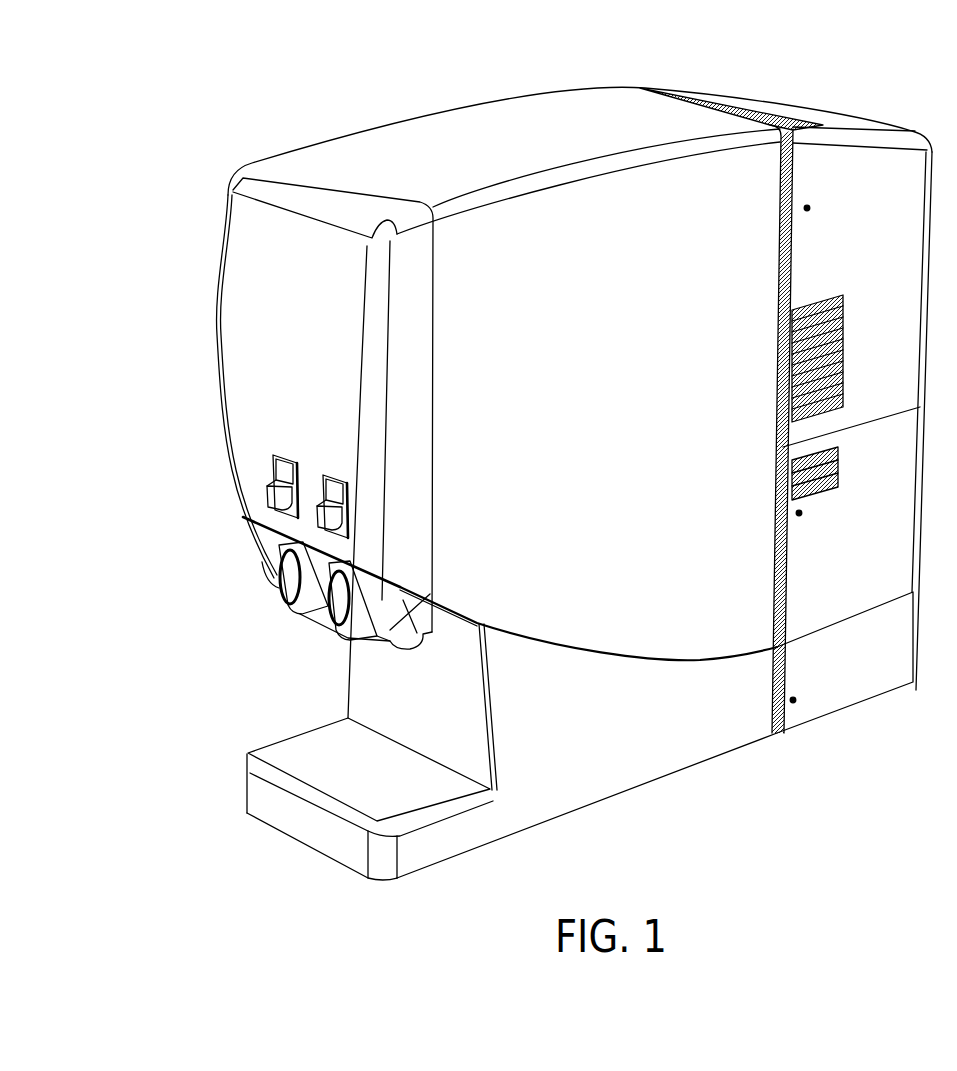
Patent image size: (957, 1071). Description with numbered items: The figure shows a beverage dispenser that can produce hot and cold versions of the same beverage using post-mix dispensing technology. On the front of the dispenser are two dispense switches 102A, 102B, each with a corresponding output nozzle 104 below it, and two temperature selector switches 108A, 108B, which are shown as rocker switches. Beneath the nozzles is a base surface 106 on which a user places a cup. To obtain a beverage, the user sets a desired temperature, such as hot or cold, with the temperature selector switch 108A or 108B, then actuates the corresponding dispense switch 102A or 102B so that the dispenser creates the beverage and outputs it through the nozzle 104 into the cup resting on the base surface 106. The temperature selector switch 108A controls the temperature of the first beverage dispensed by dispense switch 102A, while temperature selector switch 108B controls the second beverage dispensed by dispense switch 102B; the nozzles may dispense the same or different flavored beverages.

The dispense switch 102A is at (272, 602).
The dispense switch 102B is at (327, 633).
The output nozzle 104 is at (390, 652).
The base surface 106 is at (397, 767).
The temperature selector switch 108A is at (260, 497).
The temperature selector switch 108B is at (357, 515).